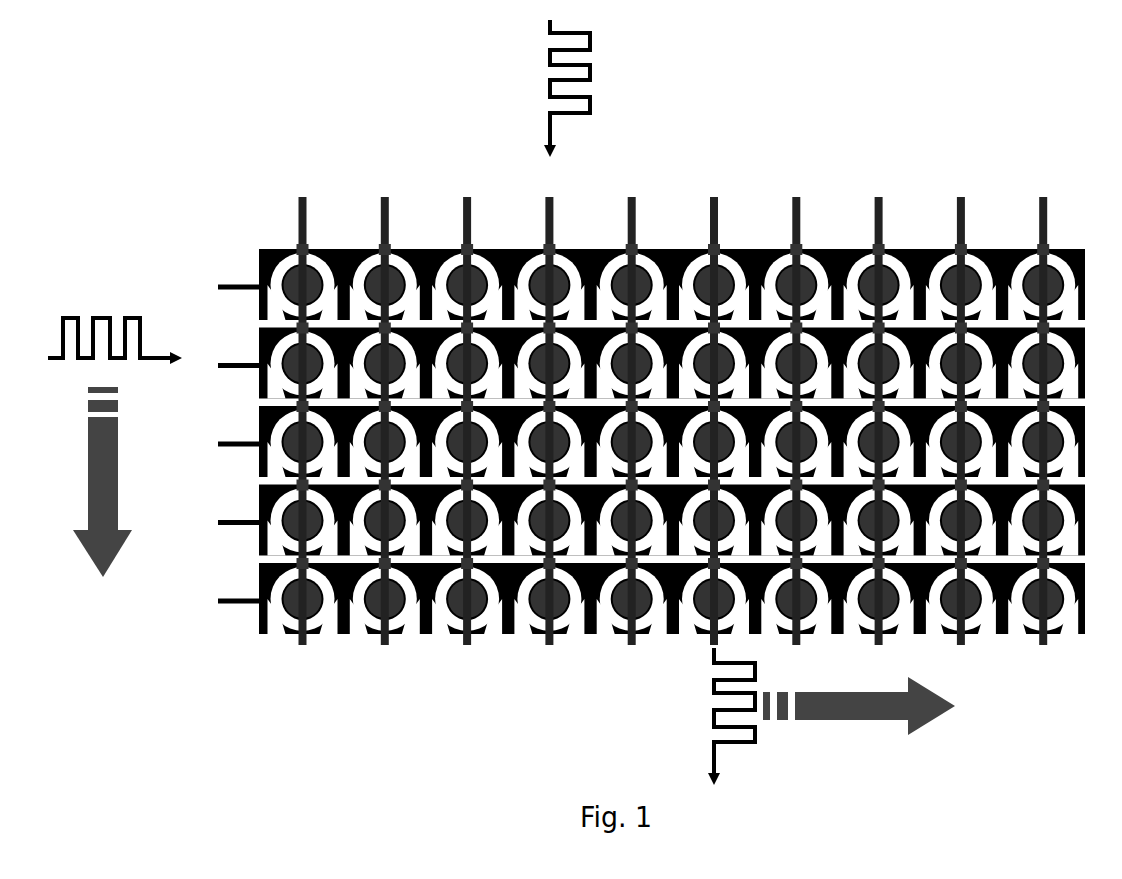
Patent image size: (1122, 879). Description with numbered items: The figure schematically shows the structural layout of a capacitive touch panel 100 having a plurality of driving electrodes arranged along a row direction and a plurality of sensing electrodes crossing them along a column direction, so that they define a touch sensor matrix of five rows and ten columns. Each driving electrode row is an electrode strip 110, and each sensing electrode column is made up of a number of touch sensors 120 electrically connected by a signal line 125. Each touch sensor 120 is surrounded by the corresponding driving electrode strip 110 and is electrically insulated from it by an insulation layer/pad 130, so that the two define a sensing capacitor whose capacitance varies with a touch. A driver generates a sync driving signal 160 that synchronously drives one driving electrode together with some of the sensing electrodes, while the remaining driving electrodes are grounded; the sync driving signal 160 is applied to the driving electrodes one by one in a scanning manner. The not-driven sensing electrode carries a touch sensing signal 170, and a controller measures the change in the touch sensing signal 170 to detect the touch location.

The capacitive touch panel 100 is at (958, 117).
The electrode strip 110 is at (259, 628).
The touch sensor 120 is at (317, 602).
The signal line 125 is at (299, 636).
The insulation layer/pad 130 is at (352, 592).
The sync driving signal 160 is at (128, 312).
The touch sensing signal 170 is at (712, 712).